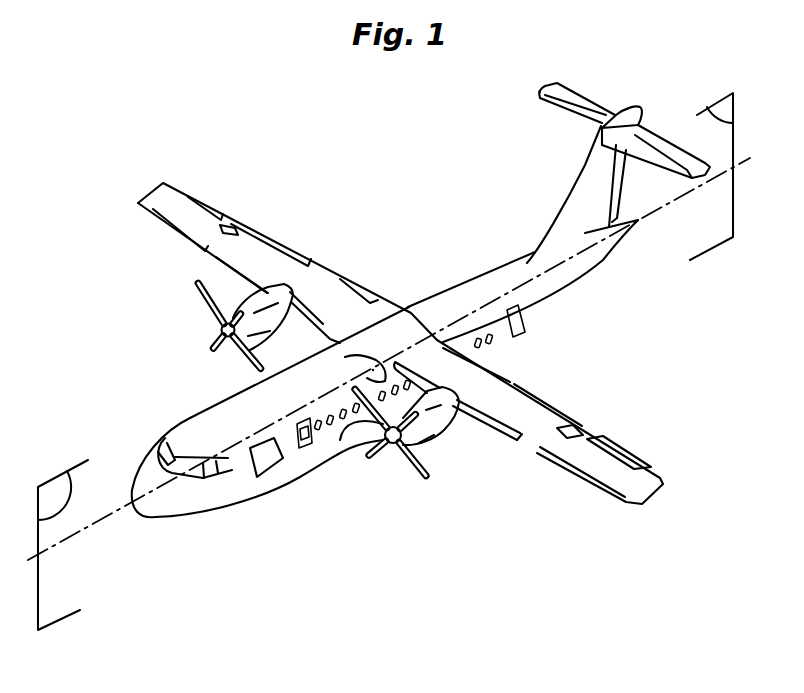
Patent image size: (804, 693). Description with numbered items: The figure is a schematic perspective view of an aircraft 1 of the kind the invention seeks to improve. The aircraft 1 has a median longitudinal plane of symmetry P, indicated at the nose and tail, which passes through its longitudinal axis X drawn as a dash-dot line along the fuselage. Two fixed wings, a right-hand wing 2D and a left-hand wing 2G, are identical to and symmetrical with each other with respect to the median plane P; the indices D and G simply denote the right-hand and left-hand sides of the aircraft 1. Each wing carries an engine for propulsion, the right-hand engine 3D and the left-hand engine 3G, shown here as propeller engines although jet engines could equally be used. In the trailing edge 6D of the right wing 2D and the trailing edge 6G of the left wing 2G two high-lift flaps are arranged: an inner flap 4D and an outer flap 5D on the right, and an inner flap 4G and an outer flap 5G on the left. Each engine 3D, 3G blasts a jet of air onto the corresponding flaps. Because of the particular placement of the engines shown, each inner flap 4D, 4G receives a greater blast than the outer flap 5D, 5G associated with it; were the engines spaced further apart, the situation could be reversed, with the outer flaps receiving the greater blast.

The aircraft 1 is at (402, 282).
The right-hand fixed wing 2D is at (287, 247).
The left-hand fixed wing 2G is at (528, 420).
The right-hand engine 3D is at (237, 350).
The left-hand engine 3G is at (445, 426).
The right-hand inner high-lift flap 4D is at (341, 279).
The left-hand inner high-lift flap 4G is at (501, 357).
The right-hand outer high-lift flap 5D is at (282, 241).
The left-hand outer high-lift flap 5G is at (541, 403).
The right-hand trailing edge 6D is at (233, 215).
The left-hand trailing edge 6G is at (583, 419).
The median longitudinal plane of symmetry P is at (385, 361).
The longitudinal axis X is at (389, 361).